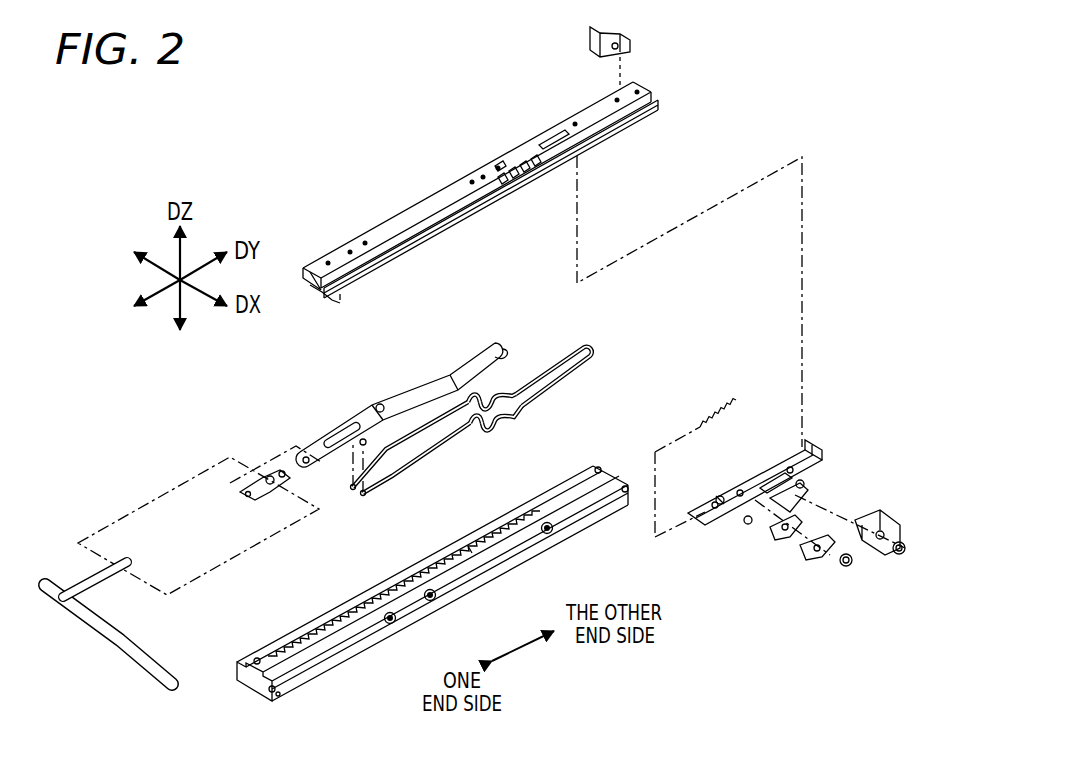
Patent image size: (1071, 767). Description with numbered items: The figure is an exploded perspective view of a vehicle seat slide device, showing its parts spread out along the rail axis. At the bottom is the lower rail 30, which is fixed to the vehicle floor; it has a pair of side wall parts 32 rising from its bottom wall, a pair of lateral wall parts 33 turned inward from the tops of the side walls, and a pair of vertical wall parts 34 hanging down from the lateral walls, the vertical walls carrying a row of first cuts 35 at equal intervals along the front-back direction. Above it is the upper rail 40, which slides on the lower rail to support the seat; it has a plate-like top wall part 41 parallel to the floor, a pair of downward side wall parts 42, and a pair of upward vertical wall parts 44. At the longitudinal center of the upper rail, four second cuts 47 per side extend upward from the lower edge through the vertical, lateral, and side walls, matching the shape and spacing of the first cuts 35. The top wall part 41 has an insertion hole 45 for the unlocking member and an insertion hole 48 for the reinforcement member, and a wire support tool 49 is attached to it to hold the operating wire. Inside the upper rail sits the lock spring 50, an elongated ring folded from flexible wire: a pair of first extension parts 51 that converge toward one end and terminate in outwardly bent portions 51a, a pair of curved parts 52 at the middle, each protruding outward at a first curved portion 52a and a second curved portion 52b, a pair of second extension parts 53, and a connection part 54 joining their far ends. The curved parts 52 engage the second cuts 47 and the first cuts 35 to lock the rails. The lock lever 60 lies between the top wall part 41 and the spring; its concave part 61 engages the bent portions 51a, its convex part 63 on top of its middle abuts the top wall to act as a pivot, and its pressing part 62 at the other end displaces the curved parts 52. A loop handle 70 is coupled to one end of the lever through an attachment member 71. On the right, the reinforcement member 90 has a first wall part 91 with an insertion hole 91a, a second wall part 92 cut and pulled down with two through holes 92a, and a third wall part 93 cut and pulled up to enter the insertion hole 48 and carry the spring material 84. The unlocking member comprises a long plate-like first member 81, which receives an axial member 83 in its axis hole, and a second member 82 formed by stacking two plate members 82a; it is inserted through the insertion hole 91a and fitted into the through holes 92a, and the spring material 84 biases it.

The lower rail 30 is at (443, 603).
The side wall part 32 is at (353, 643).
The lateral wall part 33 is at (262, 650).
The vertical wall part 34 is at (298, 640).
The first cut 35 is at (472, 553).
The upper rail 40 is at (432, 193).
The top wall part 41 is at (395, 222).
The side wall part 42 is at (413, 232).
The vertical wall part 44 is at (366, 278).
The insertion hole 45 is at (548, 129).
The second cut 47 is at (505, 196).
The insertion hole 48 is at (500, 162).
The wire support tool 49 is at (628, 46).
The lock spring 50 is at (498, 389).
The first extension part 51 is at (432, 438).
The bent portion 51a is at (353, 492).
The curved part 52 is at (519, 364).
The first curved portion 52a is at (499, 391).
The second curved portion 52b is at (473, 396).
The second extension part 53 is at (550, 351).
The connection part 54 is at (595, 354).
The lock lever 60 is at (370, 412).
The concave part 61 is at (372, 441).
The pressing part 62 is at (507, 355).
The convex part 63 is at (382, 400).
The loop handle 70 is at (93, 641).
The attachment member 71 is at (248, 502).
The first member 81 is at (876, 520).
The second member 82 is at (817, 581).
The plate member 82a is at (778, 533).
The axial member 83 is at (870, 578).
The spring material 84 is at (718, 400).
The reinforcement member 90 is at (774, 480).
The first wall part 91 is at (750, 482).
The insertion hole 91a is at (772, 470).
The second wall part 92 is at (790, 497).
The through hole 92a is at (803, 482).
The third wall part 93 is at (716, 497).